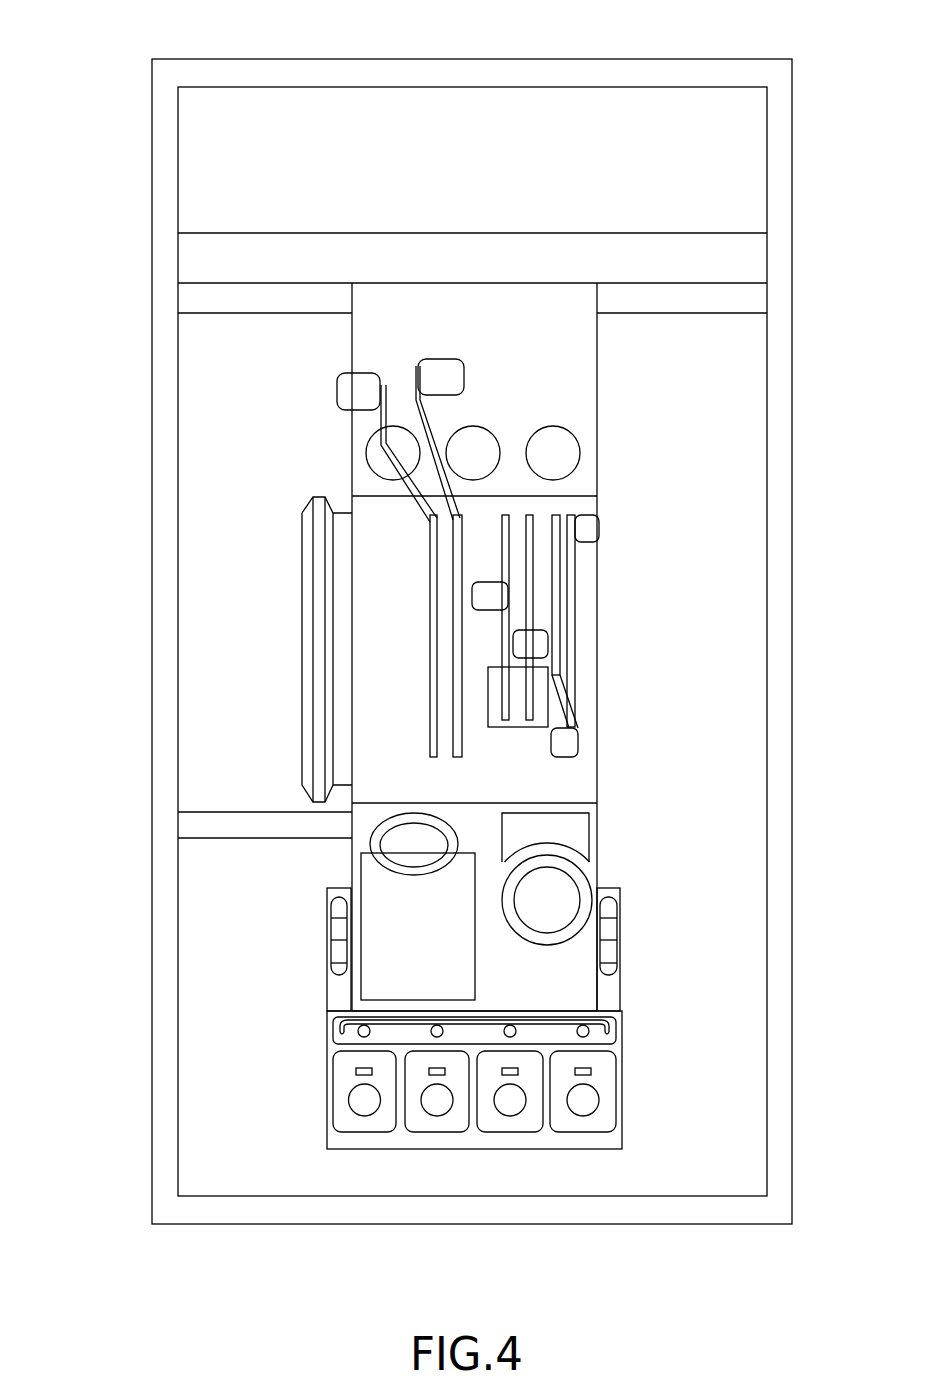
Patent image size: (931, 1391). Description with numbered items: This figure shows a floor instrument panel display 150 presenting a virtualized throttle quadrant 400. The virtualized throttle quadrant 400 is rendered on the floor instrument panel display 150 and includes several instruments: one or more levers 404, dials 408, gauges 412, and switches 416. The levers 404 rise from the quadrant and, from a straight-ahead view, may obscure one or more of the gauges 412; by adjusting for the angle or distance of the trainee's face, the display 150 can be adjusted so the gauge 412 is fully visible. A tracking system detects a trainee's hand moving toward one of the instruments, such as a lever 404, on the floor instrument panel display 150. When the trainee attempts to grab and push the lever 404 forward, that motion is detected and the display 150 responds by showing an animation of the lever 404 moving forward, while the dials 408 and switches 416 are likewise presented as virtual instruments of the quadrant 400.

The floor instrument panel display 150 is at (126, 45).
The virtualized throttle quadrant 400 is at (308, 528).
The lever 404 is at (360, 392).
The dial 408 is at (563, 888).
The gauge 412 is at (363, 445).
The switch 416 is at (333, 937).